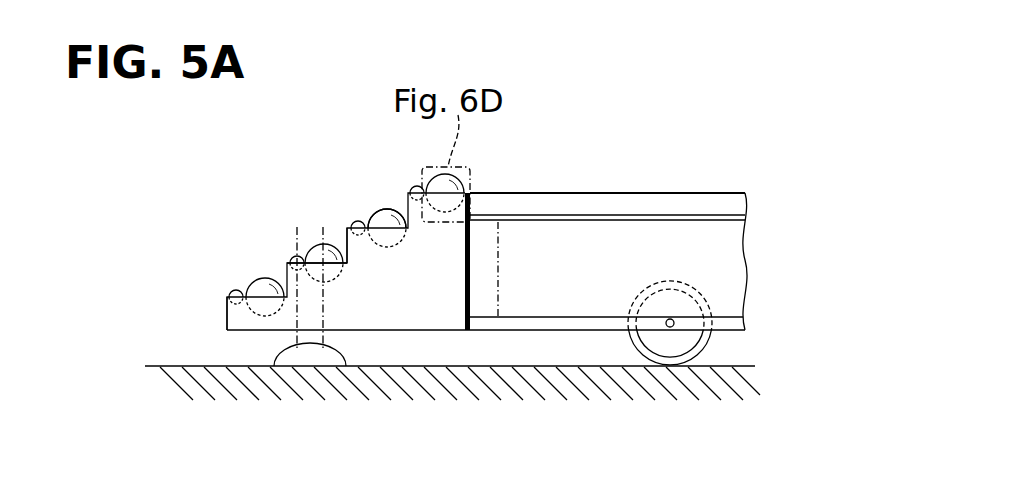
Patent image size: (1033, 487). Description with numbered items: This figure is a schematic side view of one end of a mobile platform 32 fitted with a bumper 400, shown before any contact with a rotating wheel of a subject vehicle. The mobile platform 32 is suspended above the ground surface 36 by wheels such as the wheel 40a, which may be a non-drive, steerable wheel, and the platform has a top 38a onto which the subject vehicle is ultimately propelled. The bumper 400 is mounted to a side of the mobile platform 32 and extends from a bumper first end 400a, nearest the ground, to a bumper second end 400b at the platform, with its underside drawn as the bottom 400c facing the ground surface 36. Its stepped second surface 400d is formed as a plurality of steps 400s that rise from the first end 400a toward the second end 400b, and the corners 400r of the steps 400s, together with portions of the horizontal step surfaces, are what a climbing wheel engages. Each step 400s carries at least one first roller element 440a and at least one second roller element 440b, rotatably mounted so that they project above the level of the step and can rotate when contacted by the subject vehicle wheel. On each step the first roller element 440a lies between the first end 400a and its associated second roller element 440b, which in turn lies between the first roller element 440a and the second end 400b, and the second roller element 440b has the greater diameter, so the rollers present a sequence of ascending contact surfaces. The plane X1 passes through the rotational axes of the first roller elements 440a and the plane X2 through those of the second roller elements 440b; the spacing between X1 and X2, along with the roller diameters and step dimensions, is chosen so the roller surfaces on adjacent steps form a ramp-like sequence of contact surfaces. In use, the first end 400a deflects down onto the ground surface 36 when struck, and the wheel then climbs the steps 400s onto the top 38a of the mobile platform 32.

The mobile platform 32 is at (685, 253).
The ground surface 36 is at (423, 368).
The top of the mobile platform 38a is at (607, 193).
The wheel 40a is at (703, 348).
The bumper 400 is at (411, 284).
The bumper first end 400a is at (228, 313).
The bumper second end 400b is at (470, 264).
The bottom of step assembly 400c is at (452, 332).
The stepped second surface 400d is at (385, 210).
The corners of the steps 400r is at (346, 228).
The steps 400s is at (287, 263).
The first roller element 440a is at (293, 258).
The second roller element 440b is at (318, 247).
The plane along which the rotational axes of the first roller elements extend X1 is at (274, 368).
The plane along which the rotational axes of the second roller elements extend X2 is at (344, 368).